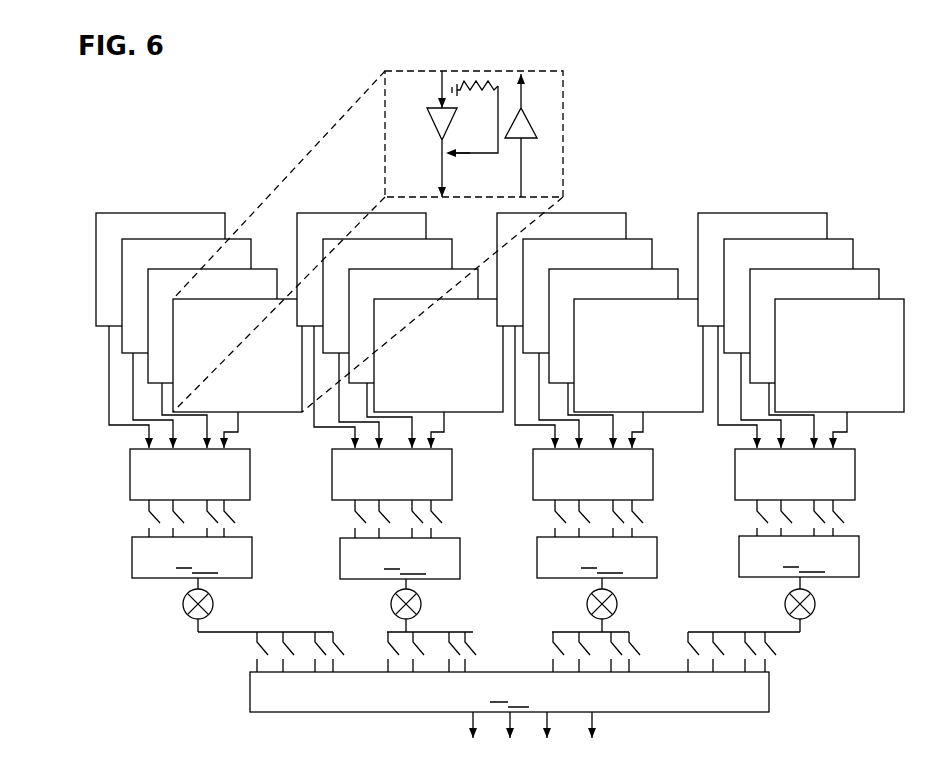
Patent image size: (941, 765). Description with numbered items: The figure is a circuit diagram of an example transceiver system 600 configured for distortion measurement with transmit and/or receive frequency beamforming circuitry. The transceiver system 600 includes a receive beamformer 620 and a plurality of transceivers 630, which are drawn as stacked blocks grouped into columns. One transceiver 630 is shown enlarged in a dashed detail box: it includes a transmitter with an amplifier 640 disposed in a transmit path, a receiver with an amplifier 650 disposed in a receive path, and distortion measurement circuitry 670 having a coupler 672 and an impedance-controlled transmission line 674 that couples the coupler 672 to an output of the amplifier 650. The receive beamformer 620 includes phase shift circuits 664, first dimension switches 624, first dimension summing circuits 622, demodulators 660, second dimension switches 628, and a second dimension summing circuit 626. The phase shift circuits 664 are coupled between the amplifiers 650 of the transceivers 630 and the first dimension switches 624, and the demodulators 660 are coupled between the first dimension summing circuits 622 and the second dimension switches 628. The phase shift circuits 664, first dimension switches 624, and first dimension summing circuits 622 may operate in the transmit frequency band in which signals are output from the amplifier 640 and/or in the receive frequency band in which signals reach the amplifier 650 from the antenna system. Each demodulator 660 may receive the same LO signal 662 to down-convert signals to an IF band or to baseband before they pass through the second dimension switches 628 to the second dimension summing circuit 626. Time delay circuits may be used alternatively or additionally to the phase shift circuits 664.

The transceiver system 600 is at (109, 138).
The transceivers 630 is at (82, 212).
The distortion measurement circuitry 670 is at (469, 78).
The coupler 672 is at (498, 96).
The amplifier 650 is at (432, 118).
The impedance-controlled transmission line 674 is at (455, 156).
The amplifier 640 is at (535, 137).
The receive beamformer 620 is at (82, 442).
The phase shift circuits 664 is at (130, 484).
The first dimension switches 624 is at (142, 518).
The first dimension summing circuits 622 is at (155, 580).
The LO signal 662 is at (180, 602).
The demodulators 660 is at (213, 598).
The second dimension switches 628 is at (250, 652).
The second dimension summing circuit 626 is at (250, 690).